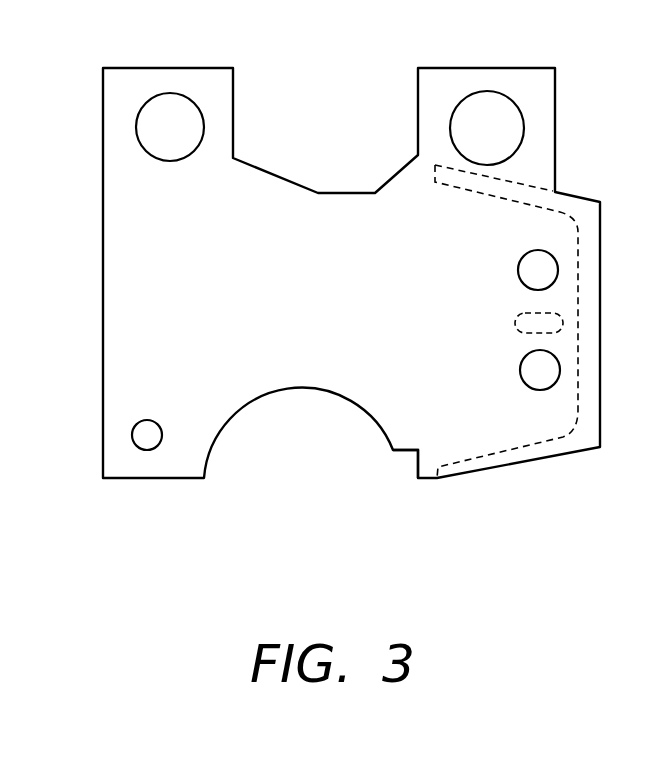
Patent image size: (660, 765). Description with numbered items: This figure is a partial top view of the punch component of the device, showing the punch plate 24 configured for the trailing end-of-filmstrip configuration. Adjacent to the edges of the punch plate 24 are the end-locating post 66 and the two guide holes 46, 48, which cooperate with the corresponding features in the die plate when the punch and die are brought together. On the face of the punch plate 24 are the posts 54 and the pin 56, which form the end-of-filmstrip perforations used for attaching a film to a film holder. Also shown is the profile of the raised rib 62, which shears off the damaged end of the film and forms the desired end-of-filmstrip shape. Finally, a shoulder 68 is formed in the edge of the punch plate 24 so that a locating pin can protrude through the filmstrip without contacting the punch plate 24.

The punch plate 24 is at (488, 477).
The guide hole 46 is at (182, 93).
The guide hole 48 is at (524, 118).
The posts 54 is at (523, 264).
The pin 56 is at (516, 318).
The raised rib 62 is at (580, 400).
The end-locating post 66 is at (149, 450).
The shoulder 68 is at (415, 460).